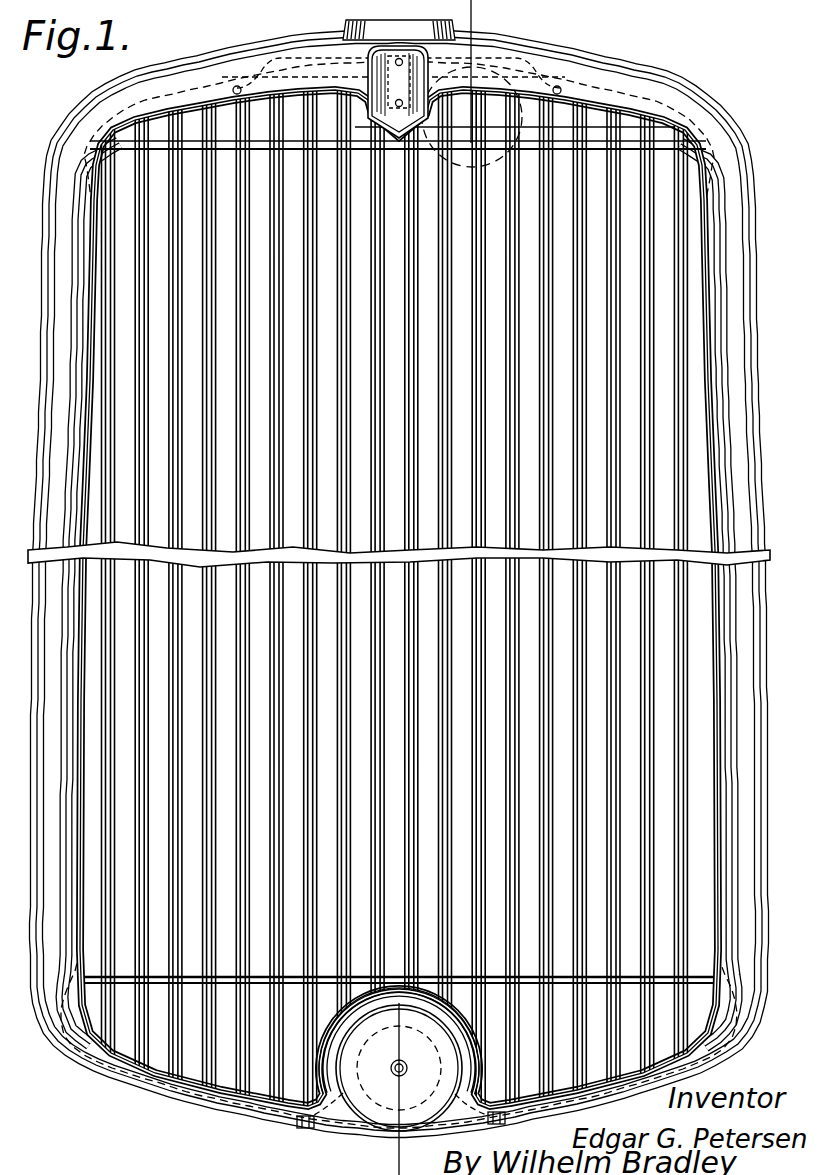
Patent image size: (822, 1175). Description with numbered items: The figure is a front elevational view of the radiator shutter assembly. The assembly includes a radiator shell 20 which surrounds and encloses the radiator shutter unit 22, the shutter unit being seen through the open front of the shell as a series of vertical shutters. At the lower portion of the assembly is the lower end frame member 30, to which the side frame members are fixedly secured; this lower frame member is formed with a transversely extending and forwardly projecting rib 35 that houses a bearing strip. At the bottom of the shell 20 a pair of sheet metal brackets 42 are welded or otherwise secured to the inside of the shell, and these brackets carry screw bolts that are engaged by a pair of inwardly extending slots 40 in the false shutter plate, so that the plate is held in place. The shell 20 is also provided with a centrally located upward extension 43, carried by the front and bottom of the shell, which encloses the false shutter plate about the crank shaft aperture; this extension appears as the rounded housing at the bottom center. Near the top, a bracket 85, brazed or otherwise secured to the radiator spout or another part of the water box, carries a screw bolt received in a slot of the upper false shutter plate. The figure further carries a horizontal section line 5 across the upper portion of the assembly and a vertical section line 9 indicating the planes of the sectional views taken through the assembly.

The radiator shell 20 is at (731, 223).
The radiator shutter unit 22 is at (192, 241).
The bracket 85 is at (496, 53).
The section line 9- 9 is at (444, 12).
The section line 5- 5 is at (563, 157).
The rib 35 is at (128, 988).
The lower end frame member 30 is at (200, 983).
The upward extension 43 is at (355, 1010).
The inwardly extending slots 40 is at (298, 1128).
The sheet metal brackets 42 is at (385, 1113).